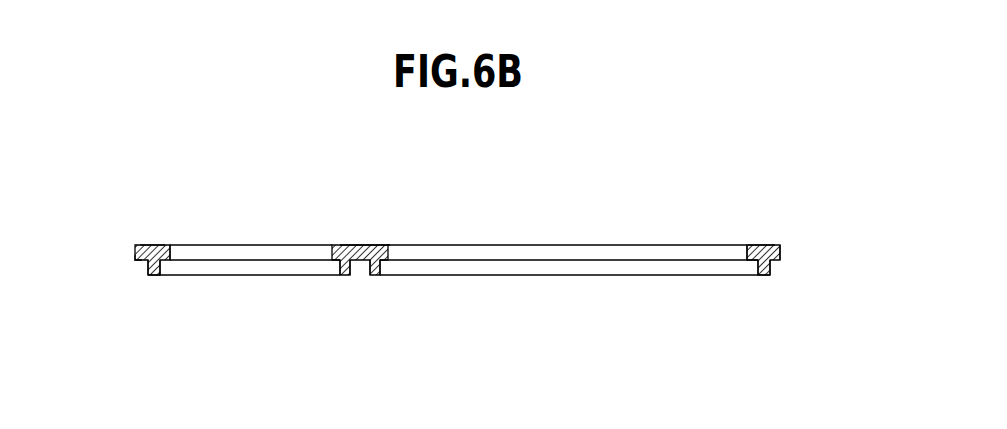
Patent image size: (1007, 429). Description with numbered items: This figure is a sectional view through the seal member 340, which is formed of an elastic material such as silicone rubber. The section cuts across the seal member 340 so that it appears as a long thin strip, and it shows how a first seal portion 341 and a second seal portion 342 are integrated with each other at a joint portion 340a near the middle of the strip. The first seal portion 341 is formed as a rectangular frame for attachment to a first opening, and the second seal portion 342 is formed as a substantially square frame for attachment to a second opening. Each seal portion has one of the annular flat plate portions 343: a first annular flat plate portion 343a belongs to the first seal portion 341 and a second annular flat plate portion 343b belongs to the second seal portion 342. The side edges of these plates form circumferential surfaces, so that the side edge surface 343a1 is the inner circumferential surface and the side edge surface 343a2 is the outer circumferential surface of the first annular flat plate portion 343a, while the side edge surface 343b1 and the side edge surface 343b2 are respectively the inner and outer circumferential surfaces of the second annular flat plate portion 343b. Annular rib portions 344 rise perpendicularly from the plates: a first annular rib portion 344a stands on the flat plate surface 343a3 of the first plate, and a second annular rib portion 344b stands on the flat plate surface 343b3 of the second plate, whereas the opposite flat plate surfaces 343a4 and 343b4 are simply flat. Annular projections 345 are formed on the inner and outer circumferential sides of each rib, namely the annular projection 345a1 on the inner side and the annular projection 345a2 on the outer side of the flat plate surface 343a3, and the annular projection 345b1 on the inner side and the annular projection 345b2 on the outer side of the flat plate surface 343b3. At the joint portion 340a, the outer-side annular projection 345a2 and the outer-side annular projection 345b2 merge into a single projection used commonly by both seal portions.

The seal member 340 is at (507, 220).
The joint portion 340a is at (365, 243).
The first seal portion 341 is at (460, 242).
The second seal portion 342 is at (308, 243).
The annular flat plate portions 343 is at (456, 272).
The first annular flat plate portion 343a is at (757, 245).
The side edge surface 343a1 is at (748, 245).
The side edge surface 343a2 is at (782, 250).
The flat plate surface 343a3 is at (755, 275).
The flat plate surface 343a4 is at (753, 245).
The second annular flat plate portion 343b is at (142, 244).
The side edge surface 343b1 is at (178, 245).
The side edge surface 343b2 is at (137, 258).
The flat plate surface 343b3 is at (158, 275).
The flat plate surface 343b4 is at (152, 245).
The annular rib portions 344 is at (459, 322).
The first annular rib portion 344a is at (597, 273).
The second annular rib portion 344b is at (305, 273).
The annular projections 345 is at (398, 305).
The annular projection 345a1 is at (752, 272).
The annular projection 345a2 is at (773, 272).
The annular projection 345b1 is at (165, 265).
The annular projection 345b2 is at (150, 262).